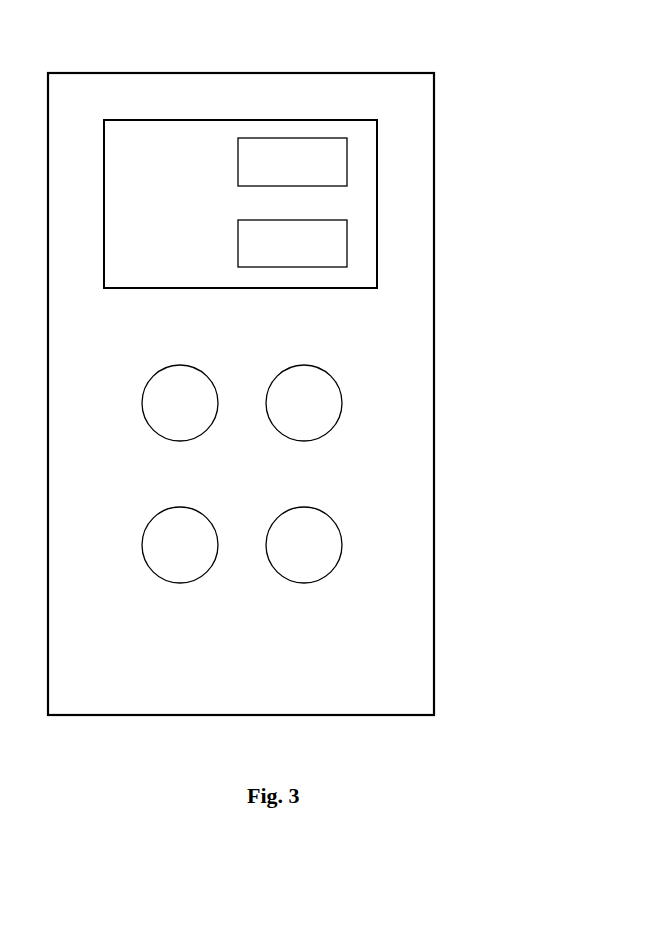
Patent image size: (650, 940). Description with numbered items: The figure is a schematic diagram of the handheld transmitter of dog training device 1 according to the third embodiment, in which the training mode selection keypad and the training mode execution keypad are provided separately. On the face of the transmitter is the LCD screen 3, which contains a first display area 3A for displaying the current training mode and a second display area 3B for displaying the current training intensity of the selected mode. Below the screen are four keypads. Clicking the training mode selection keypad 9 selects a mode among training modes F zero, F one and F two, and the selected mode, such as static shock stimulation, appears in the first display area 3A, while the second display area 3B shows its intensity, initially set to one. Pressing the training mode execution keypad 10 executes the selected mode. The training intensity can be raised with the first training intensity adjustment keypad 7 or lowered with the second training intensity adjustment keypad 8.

The handheld transmitter of dog training device 1 is at (423, 62).
The LCD screen 3 is at (310, 204).
The first display area on the LCD screen 3A is at (292, 162).
The second display area on the LCD screen 3B is at (292, 243).
The training intensity adjustment keypad 7 is at (312, 592).
The training intensity adjustment keypad 8 is at (185, 592).
The training mode selection keypad 9 is at (312, 452).
The training mode execution keypad 10 is at (182, 452).